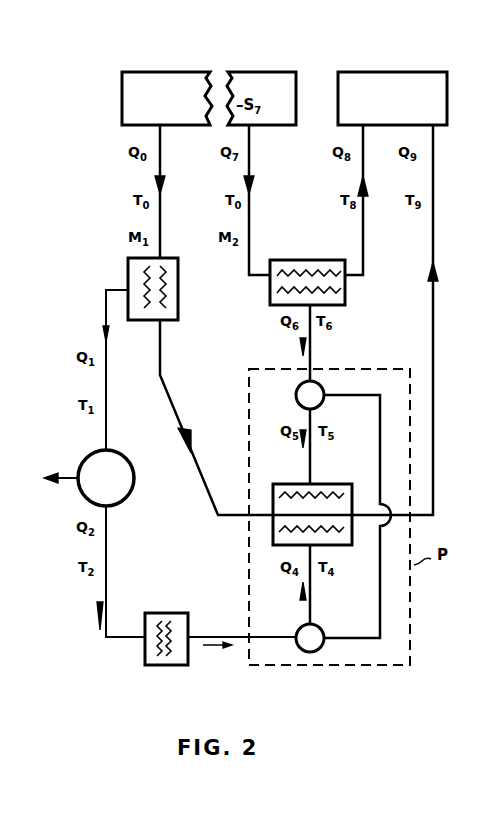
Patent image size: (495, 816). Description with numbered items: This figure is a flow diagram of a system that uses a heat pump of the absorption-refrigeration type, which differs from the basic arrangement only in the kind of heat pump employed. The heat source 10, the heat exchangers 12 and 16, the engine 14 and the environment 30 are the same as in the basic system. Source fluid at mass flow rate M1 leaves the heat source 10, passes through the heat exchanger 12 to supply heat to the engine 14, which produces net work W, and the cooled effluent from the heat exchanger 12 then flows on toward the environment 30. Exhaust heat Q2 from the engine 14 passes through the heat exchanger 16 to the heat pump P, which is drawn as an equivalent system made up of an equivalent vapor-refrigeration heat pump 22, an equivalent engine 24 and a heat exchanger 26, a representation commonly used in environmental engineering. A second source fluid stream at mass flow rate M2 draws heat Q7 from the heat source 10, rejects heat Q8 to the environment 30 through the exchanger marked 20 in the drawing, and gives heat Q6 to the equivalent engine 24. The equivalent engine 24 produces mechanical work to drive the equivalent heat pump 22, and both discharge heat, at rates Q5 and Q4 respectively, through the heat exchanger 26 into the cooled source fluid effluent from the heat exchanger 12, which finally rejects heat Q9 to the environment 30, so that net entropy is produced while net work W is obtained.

The heat source 10 is at (156, 76).
The heat exchanger 12 is at (179, 292).
The engine 14 is at (134, 470).
The heat exchanger 16 is at (161, 612).
The heat exchanger 20 is at (346, 292).
The equivalent vapor-refrigeration heat pump 22 is at (296, 632).
The equivalent engine 24 is at (296, 396).
The heat exchanger 26 is at (322, 484).
The environment 30 is at (351, 72).